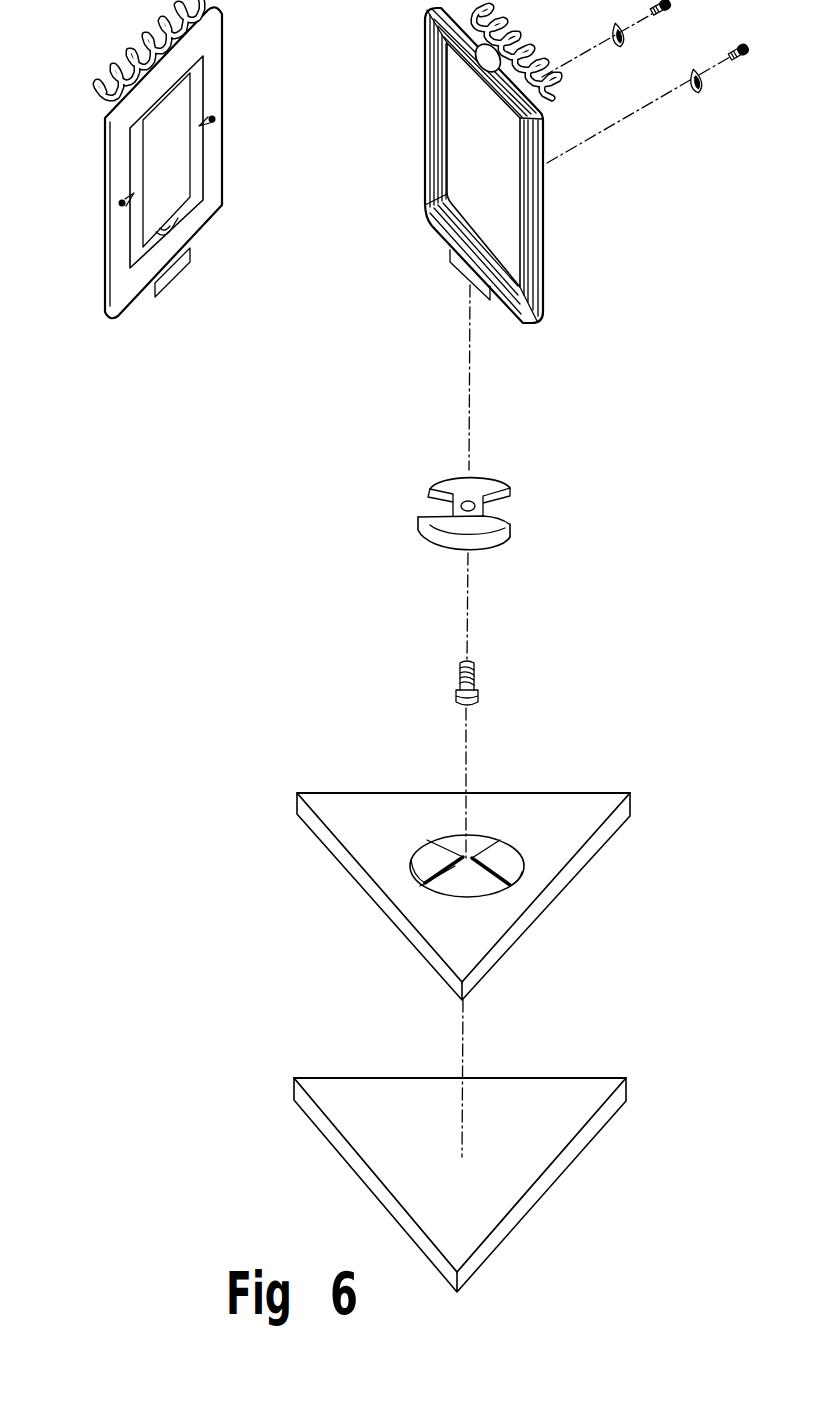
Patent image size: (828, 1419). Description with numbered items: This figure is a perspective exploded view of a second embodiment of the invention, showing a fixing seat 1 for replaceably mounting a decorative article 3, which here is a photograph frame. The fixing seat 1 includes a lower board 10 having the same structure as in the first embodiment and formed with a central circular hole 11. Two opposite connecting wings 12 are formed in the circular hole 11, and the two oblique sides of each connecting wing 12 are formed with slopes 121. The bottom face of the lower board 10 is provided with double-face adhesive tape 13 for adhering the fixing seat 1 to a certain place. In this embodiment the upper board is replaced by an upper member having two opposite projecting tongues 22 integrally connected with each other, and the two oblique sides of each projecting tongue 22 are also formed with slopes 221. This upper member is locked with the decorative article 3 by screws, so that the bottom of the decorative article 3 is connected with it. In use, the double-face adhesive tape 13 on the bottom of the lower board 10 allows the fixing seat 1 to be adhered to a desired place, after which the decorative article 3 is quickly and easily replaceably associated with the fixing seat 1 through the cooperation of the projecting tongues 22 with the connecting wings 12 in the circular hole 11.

The fixing seat 1 is at (657, 694).
The decorative article 3 is at (104, 168).
The lower board 10 is at (446, 869).
The central circular hole 11 is at (495, 903).
The connecting wing 12 is at (427, 843).
The slope 121 is at (440, 877).
The double-face adhesive tape 13 is at (391, 1184).
The projecting tongue 22 is at (466, 509).
The slope 221 is at (443, 491).